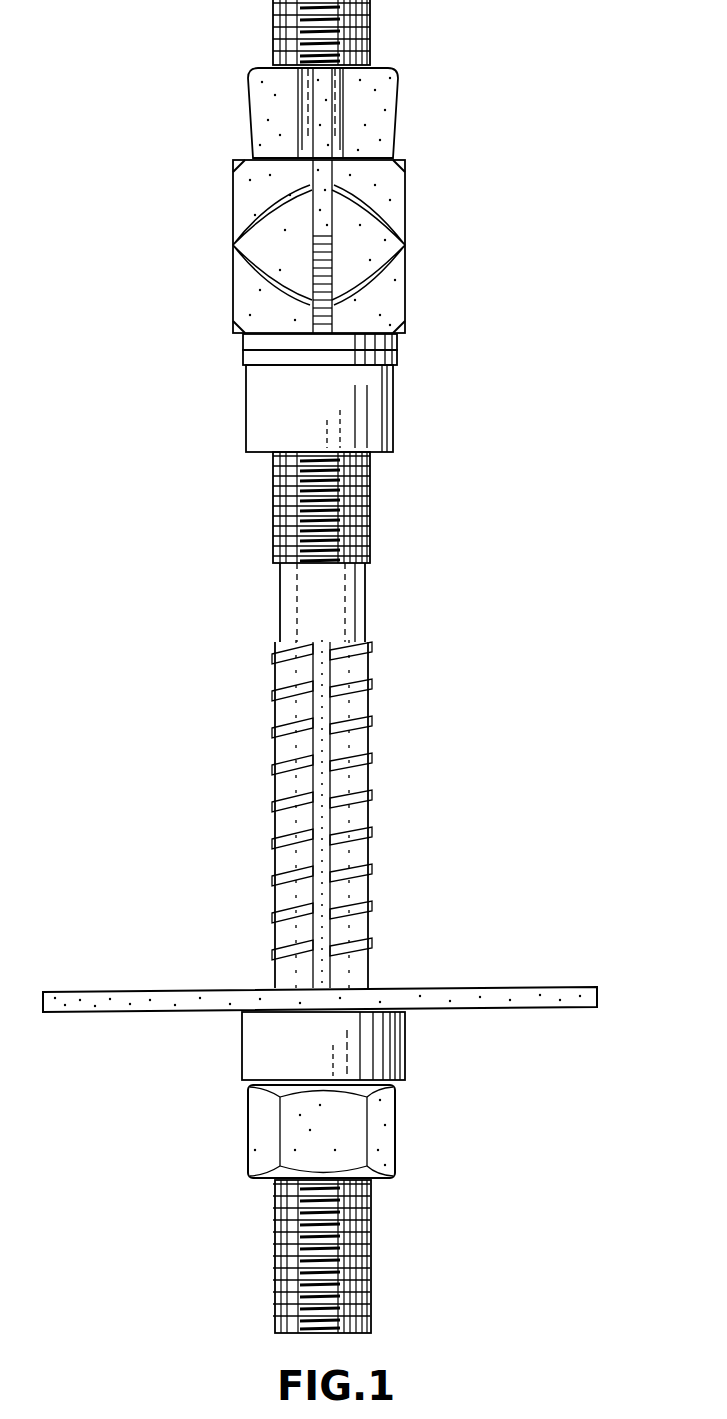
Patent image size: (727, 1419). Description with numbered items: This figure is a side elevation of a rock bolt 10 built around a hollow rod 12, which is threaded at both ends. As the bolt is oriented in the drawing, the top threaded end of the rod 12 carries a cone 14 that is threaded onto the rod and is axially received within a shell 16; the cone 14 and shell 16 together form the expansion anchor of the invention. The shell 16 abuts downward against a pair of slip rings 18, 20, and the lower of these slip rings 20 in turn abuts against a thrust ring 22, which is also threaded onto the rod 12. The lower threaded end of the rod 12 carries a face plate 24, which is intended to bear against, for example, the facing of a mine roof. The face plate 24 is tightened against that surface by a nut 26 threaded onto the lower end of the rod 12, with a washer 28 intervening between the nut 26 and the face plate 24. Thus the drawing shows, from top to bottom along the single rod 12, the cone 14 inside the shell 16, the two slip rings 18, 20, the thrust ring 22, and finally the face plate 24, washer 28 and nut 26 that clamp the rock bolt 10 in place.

The rock bolt 10 is at (188, 195).
The hollow rod 12 is at (370, 22).
The cone 14 is at (373, 116).
The shell 16 is at (395, 205).
The slip ring 18 is at (397, 345).
The slip ring 20 is at (397, 358).
The thrust ring 22 is at (378, 418).
The face plate 24 is at (498, 1000).
The nut 26 is at (380, 1143).
The washer 28 is at (380, 1052).